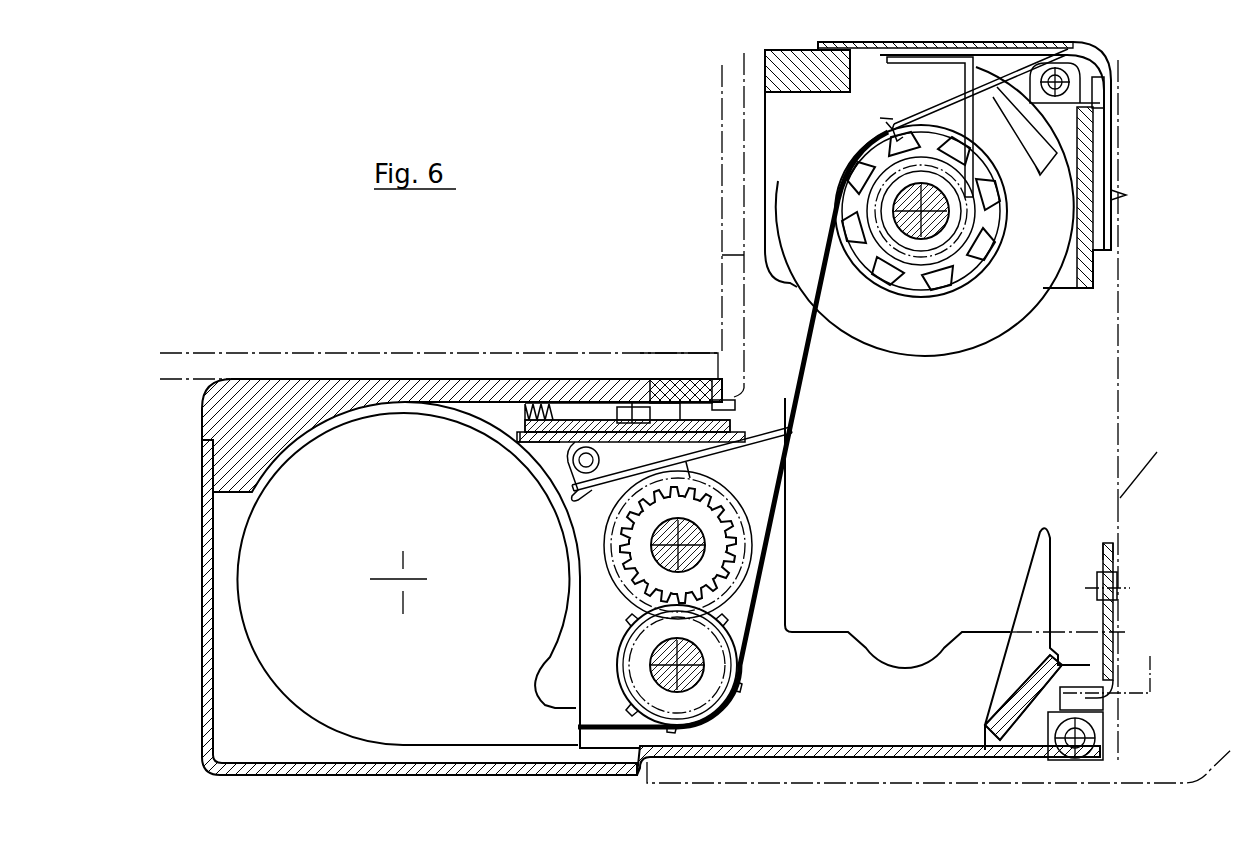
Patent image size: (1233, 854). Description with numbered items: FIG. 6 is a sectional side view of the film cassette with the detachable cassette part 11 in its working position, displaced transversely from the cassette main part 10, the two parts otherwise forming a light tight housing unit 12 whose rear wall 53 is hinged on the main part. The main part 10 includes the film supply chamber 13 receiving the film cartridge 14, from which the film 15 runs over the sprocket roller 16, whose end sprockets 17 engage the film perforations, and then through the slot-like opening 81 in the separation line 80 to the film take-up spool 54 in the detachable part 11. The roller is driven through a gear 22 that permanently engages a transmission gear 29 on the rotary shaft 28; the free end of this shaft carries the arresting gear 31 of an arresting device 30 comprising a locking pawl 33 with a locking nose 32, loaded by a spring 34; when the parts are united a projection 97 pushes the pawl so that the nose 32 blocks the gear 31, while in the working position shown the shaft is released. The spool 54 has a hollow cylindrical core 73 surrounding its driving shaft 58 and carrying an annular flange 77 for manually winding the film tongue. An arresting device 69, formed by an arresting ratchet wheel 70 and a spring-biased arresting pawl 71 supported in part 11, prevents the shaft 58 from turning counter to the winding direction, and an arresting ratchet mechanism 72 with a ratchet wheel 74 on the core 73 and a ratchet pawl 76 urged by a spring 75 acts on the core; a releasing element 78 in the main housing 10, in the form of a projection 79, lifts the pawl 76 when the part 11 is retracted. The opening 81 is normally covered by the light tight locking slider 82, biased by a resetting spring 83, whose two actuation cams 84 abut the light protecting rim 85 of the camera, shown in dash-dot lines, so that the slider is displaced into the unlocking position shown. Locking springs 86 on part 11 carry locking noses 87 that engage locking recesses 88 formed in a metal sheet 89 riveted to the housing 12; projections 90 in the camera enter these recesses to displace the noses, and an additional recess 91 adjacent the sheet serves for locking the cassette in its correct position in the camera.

The cassette main part 10 is at (290, 377).
The detachable cassette part 11 is at (790, 90).
The light tight housing unit 12 is at (388, 379).
The film supply chamber 13 is at (258, 728).
The film cartridge 14 is at (373, 673).
The film 15 is at (799, 390).
The sprocket roller 16 is at (642, 655).
The sprockets 17 is at (740, 698).
The gear 22 is at (715, 668).
The rotary shaft 28 is at (625, 548).
The transmission gear 29 is at (745, 552).
The arresting device 30 is at (703, 470).
The arresting gear 31 is at (750, 503).
The locking nose 32 is at (585, 505).
The locking pawl 33 is at (575, 480).
The spring 34 is at (545, 440).
The rear wall 53 is at (205, 647).
The film take-up spool 54 is at (1000, 335).
The driving shaft 58 is at (928, 237).
The arresting device 69 is at (973, 183).
The arresting ratchet wheel 70 is at (1003, 250).
The arresting pawl 71 is at (917, 122).
The arresting ratchet mechanism 72 is at (905, 115).
The hollow cylindrical core 73 is at (872, 300).
The ratchet wheel 74 is at (878, 272).
The spring 75 is at (974, 110).
The ratchet pawl 76 is at (1062, 66).
The annular flange 77 is at (956, 330).
The releasing element 78 is at (1060, 532).
The projection 79 is at (1040, 580).
The separation line 80 is at (727, 420).
The slot-like opening 81 is at (745, 437).
The locking slider 82 is at (598, 403).
The resetting spring 83 is at (575, 403).
The actuation cams 84 is at (632, 407).
The light protecting rim 85 is at (708, 403).
The locking springs 86 is at (1112, 176).
The locking nose 87 is at (1128, 195).
The locking recesses 88 is at (1107, 582).
The metal sheet 89 is at (1117, 635).
The projections 90 is at (1117, 552).
The additional recess 91 is at (1108, 707).
The projection 97 is at (886, 122).